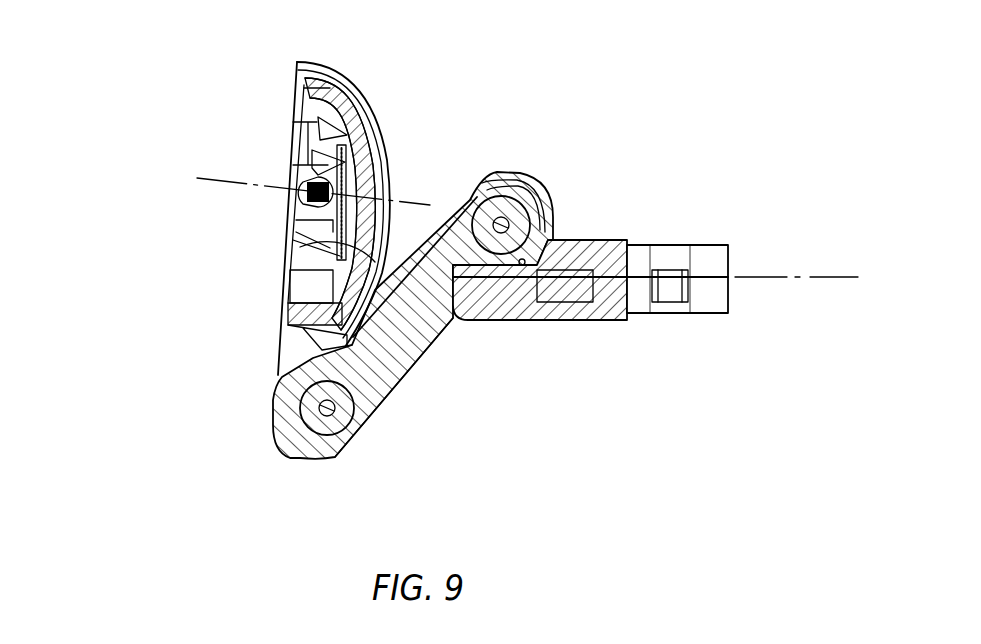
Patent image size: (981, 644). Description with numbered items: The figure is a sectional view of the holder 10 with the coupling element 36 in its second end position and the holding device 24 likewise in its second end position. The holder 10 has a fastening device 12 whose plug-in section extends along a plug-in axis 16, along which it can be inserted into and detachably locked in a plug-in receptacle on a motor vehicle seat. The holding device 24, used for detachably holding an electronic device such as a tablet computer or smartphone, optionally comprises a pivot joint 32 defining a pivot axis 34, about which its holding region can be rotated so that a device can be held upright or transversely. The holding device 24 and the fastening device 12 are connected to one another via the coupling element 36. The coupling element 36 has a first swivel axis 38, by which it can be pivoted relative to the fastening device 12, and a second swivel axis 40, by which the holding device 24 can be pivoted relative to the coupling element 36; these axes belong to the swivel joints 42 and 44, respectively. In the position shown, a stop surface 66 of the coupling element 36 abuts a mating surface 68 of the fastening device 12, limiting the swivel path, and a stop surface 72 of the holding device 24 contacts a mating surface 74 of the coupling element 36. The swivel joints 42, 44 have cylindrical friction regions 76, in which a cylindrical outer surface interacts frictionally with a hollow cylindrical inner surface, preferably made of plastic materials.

The holder 10 is at (678, 86).
The fastening device 12 is at (641, 225).
The plug-in axis 16 is at (853, 277).
The holding device 24 is at (216, 268).
The pivot joint 32 is at (265, 128).
The pivot axis 34 is at (202, 178).
The coupling element 36 is at (459, 362).
The first swivel axis 38 is at (479, 176).
The second swivel axis 40 is at (340, 430).
The swivel joint 42 is at (556, 165).
The swivel joint 44 is at (288, 468).
The stop surface 66 is at (445, 212).
The mating surface 68 is at (492, 320).
The stop surface 72 is at (400, 387).
The mating surface 74 is at (287, 240).
The cylindrical friction region 76 is at (520, 178).